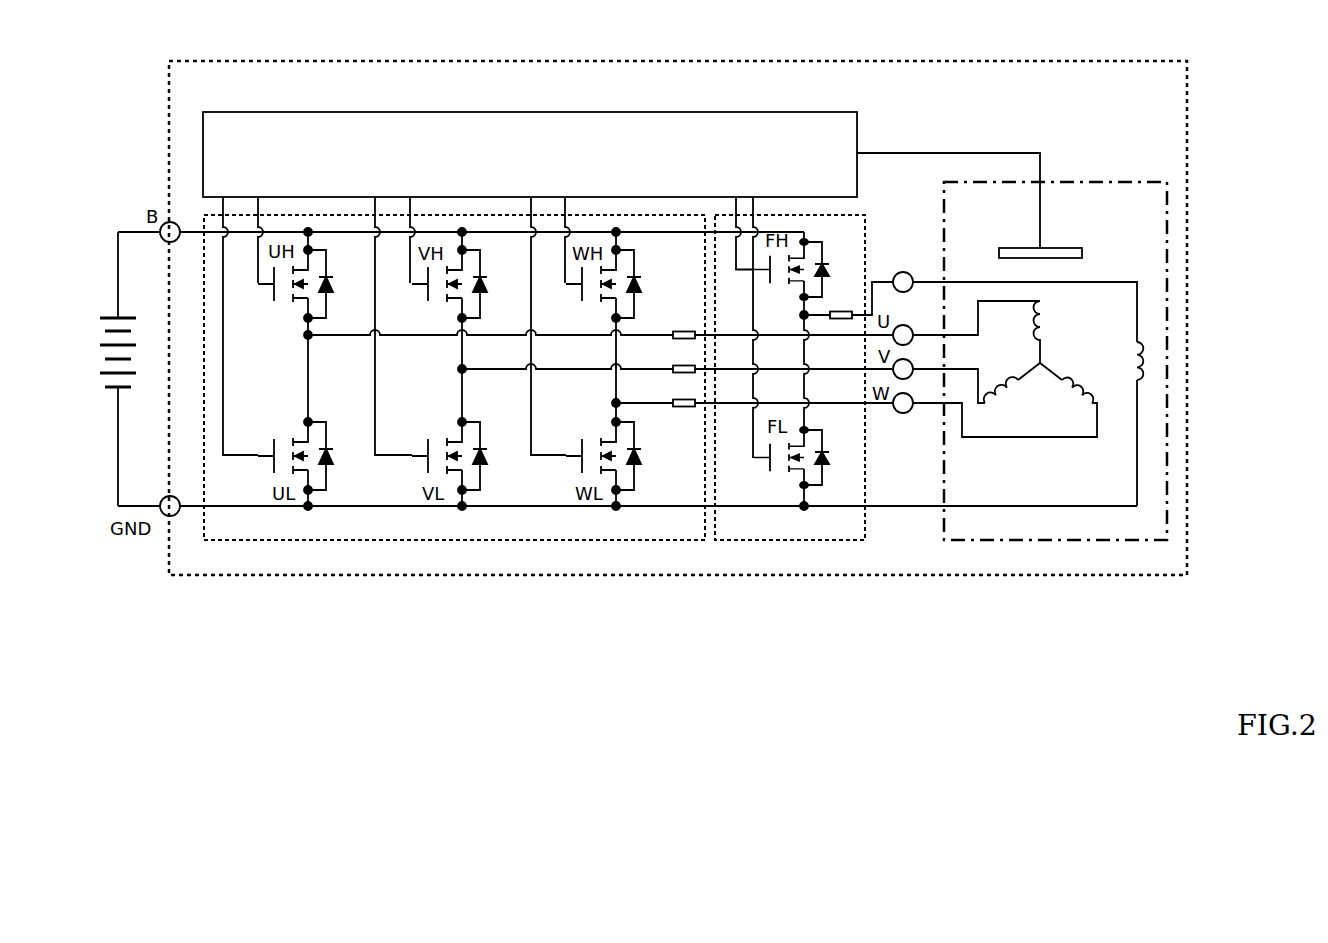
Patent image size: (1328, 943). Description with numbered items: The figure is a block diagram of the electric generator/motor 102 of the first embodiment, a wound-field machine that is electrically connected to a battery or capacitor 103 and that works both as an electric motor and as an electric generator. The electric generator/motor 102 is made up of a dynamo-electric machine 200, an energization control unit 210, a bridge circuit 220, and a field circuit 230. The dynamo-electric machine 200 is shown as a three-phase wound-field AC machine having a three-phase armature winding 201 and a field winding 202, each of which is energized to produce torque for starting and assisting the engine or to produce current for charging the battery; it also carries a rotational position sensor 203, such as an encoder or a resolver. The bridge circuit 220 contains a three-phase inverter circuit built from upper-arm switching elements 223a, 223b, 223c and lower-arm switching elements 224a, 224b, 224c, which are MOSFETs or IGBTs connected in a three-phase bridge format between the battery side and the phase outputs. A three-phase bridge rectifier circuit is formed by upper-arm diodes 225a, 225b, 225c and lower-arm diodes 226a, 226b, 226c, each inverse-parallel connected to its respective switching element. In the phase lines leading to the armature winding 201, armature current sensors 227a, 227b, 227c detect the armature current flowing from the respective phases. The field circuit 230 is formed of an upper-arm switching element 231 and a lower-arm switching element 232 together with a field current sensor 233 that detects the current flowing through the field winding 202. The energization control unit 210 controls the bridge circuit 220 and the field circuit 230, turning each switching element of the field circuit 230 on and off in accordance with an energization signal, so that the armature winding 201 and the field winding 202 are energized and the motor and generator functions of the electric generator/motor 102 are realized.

The electric generator/motor 102 is at (228, 62).
The battery or capacitor 103 is at (100, 324).
The dynamo-electric machine 200 is at (1075, 183).
The armature winding 201 is at (1044, 360).
The field winding 202 is at (1131, 345).
The rotational position sensor 203 is at (1082, 253).
The energization control unit 210 is at (712, 112).
The bridge circuit 220 is at (270, 541).
The upper-arm switching element 223a is at (274, 301).
The upper-arm switching element 223b is at (428, 301).
The upper-arm switching element 223c is at (582, 301).
The lower-arm switching element 224a is at (274, 439).
The lower-arm switching element 224b is at (428, 439).
The lower-arm switching element 224c is at (582, 439).
The upper-arm diode 225a is at (328, 276).
The upper-arm diode 225b is at (482, 276).
The upper-arm diode 225c is at (636, 276).
The lower-arm diode 226a is at (328, 448).
The lower-arm diode 226b is at (482, 448).
The lower-arm diode 226c is at (636, 448).
The armature current sensor 227a is at (672, 325).
The armature current sensor 227b is at (671, 357).
The armature current sensor 227c is at (671, 393).
The field circuit 230 is at (757, 541).
The upper-arm switching element 231 is at (776, 286).
The lower-arm switching element 232 is at (776, 472).
The field current sensor 233 is at (844, 304).